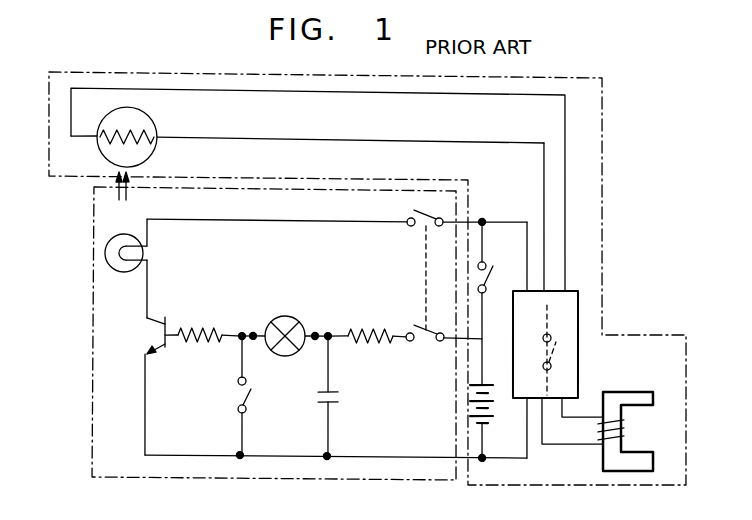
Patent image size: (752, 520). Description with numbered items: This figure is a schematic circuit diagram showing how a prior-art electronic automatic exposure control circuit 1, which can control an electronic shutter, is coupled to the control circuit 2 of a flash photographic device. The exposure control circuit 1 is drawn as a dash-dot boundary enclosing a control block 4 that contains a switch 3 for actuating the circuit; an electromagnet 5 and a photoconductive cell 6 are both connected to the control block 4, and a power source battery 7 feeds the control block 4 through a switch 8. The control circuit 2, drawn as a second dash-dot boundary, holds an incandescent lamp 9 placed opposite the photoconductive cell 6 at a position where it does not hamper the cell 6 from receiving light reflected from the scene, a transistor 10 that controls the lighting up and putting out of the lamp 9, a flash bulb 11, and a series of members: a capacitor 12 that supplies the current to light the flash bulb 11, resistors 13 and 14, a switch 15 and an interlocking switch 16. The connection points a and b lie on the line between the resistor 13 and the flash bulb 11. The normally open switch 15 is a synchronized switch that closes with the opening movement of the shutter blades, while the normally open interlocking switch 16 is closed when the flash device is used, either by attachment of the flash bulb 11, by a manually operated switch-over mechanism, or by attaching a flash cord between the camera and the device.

The electronic automatic exposure control circuit 1 is at (602, 134).
The control circuit 2 is at (91, 299).
The switch 3 is at (555, 350).
The control block 4 is at (550, 322).
The electromagnet 5 is at (626, 415).
The photoconductive cell 6 is at (141, 134).
The power source battery 7 is at (487, 406).
The switch 8 is at (496, 303).
The incandescent lamp 9 is at (107, 252).
The transistor 10 is at (135, 334).
The flash bulb 11 is at (292, 318).
The capacitor 12 is at (349, 396).
The resistor 13 is at (204, 316).
The resistor 14 is at (367, 318).
The switch 15 is at (263, 395).
The interlocking switch 16 is at (424, 268).
The node a is at (238, 313).
The node b is at (251, 313).